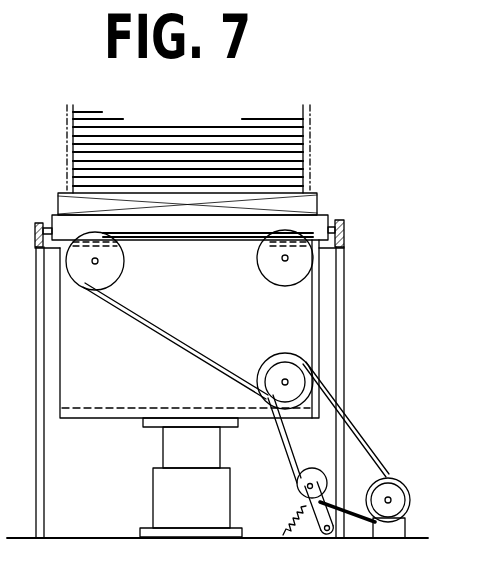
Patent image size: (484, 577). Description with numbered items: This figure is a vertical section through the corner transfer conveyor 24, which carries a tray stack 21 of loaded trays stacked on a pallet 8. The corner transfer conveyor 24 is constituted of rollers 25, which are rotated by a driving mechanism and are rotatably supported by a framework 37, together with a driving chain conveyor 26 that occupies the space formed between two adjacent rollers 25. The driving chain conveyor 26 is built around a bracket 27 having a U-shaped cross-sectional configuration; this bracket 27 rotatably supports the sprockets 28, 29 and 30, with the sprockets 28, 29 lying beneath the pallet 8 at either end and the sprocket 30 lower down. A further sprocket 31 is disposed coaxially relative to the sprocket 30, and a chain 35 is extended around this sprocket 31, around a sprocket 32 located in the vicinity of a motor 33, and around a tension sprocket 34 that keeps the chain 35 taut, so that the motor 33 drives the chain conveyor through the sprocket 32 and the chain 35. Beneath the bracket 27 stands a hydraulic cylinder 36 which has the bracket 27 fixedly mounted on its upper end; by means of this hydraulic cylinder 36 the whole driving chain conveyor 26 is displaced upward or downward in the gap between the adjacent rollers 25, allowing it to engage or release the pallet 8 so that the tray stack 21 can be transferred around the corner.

The tray stack 21 is at (78, 143).
The pallet 8 is at (62, 205).
The rollers 25 is at (55, 223).
The corner transfer conveyor 24 is at (35, 258).
The framework 37 is at (345, 233).
The sprocket 28 is at (73, 268).
The sprocket 29 is at (297, 277).
The driving chain conveyor 26 is at (124, 312).
The bracket 27 is at (83, 421).
The sprocket 30 is at (300, 362).
The sprocket 31 is at (297, 392).
The chain 35 is at (361, 410).
The sprocket 32 is at (393, 477).
The motor 33 is at (398, 497).
The tension sprocket 34 is at (300, 488).
The hydraulic cylinder 36 is at (162, 498).